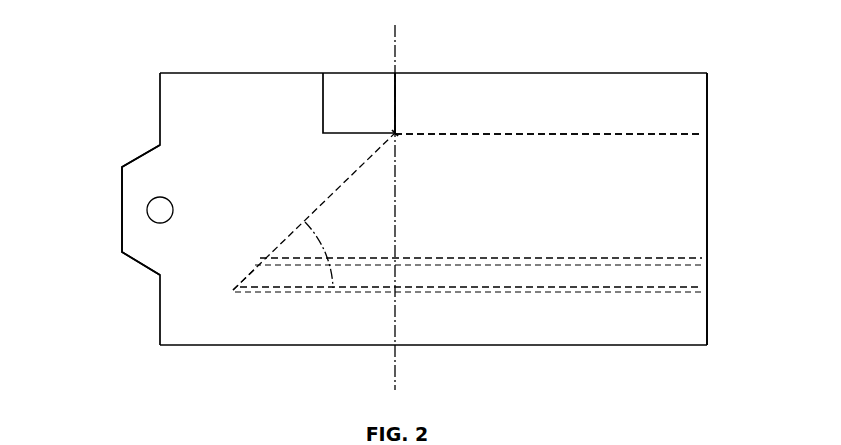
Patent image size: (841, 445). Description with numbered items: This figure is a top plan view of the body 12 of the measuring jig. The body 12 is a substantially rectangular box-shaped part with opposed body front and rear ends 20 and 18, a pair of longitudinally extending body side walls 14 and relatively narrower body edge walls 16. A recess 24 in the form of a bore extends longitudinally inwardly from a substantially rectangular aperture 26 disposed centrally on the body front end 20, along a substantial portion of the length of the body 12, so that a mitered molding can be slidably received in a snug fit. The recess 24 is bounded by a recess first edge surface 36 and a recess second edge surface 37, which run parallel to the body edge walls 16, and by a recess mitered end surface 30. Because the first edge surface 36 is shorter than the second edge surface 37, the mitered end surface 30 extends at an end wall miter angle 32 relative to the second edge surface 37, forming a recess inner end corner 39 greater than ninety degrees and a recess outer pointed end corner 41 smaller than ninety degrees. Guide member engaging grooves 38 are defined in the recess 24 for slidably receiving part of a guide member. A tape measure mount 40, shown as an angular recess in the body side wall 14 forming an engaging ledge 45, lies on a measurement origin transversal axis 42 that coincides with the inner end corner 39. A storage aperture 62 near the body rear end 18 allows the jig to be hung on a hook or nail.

The body 12 is at (110, 108).
The body side wall 14 is at (188, 133).
The body edge wall 16 is at (225, 73).
The body rear end 18 is at (122, 215).
The body front end 20 is at (707, 113).
The recess 24 is at (693, 208).
The aperture 26 is at (707, 135).
The recess mitered end surface 30 is at (335, 192).
The end wall miter angle 32 is at (327, 250).
The recess first edge surface 36 is at (588, 134).
The recess second edge surface 37 is at (542, 292).
The guide member engaging grooves 38 is at (489, 258).
The recess inner end corner 39 is at (395, 133).
The tape measure mount 40 is at (353, 100).
The recess outer pointed end corner 41 is at (238, 292).
The measurement origin transversal axis 42 is at (395, 28).
The engaging ledge 45 is at (395, 98).
The storage aperture 62 is at (166, 220).